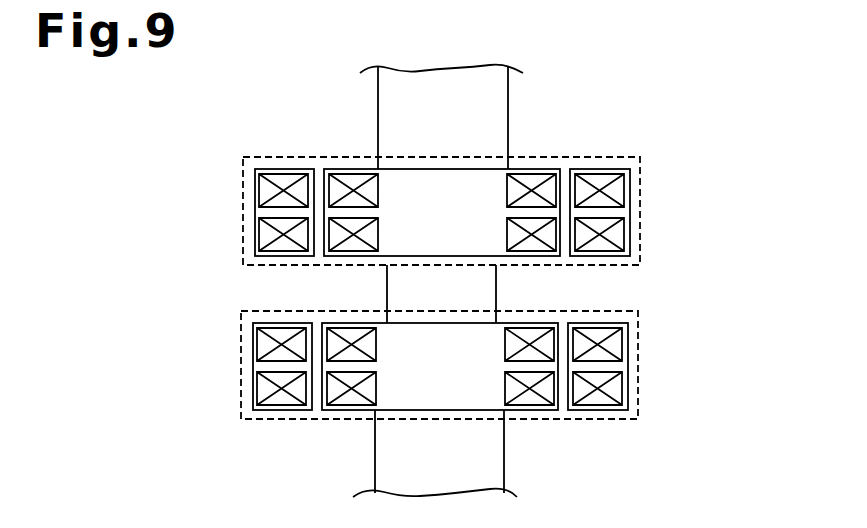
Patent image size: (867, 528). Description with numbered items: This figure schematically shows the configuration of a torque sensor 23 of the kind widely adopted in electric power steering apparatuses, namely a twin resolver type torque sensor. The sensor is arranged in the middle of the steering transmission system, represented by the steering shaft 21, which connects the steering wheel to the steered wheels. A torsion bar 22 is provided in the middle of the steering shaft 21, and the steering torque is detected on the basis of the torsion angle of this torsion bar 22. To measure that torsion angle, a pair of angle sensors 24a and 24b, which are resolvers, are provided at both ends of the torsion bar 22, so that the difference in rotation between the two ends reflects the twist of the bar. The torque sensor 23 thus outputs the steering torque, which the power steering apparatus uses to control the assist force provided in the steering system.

The steering shaft 21 is at (508, 103).
The torsion bar 22 is at (496, 285).
The torque sensor 23 is at (728, 157).
The angle sensor 24a is at (640, 215).
The angle sensor 24b is at (640, 368).